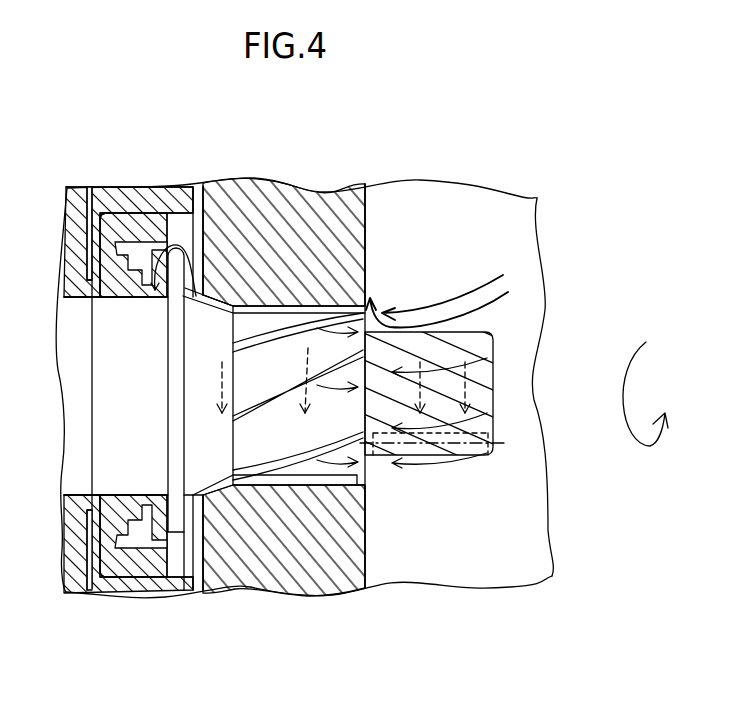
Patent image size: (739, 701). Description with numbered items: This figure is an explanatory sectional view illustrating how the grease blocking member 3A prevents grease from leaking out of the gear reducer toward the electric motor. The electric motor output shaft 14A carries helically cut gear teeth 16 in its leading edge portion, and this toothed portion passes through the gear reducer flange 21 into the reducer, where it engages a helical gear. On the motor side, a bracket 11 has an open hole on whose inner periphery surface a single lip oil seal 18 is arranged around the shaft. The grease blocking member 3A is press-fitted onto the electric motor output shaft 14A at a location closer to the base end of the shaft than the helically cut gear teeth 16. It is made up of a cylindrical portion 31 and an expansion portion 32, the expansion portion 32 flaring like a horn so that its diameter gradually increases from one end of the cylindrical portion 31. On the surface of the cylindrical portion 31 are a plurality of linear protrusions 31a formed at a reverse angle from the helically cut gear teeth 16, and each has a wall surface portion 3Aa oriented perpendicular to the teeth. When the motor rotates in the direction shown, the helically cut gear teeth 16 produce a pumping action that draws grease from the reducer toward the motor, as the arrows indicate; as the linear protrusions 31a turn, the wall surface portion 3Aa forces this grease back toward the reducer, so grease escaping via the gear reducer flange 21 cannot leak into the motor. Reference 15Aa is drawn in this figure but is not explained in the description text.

The grease blocking member 3A is at (266, 545).
The wall surface portion 3Aa is at (298, 342).
The bracket 11 is at (155, 587).
The electric motor output shaft 14A is at (478, 338).
The communication hole 15Aa is at (436, 463).
The helically cut gear teeth 16 is at (490, 400).
The oil seal 18 is at (120, 580).
The gear reducer flange 21 is at (240, 585).
The cylindrical portion 31 is at (275, 348).
The linear protrusions 31a is at (314, 455).
The expansion portion 32 is at (213, 330).